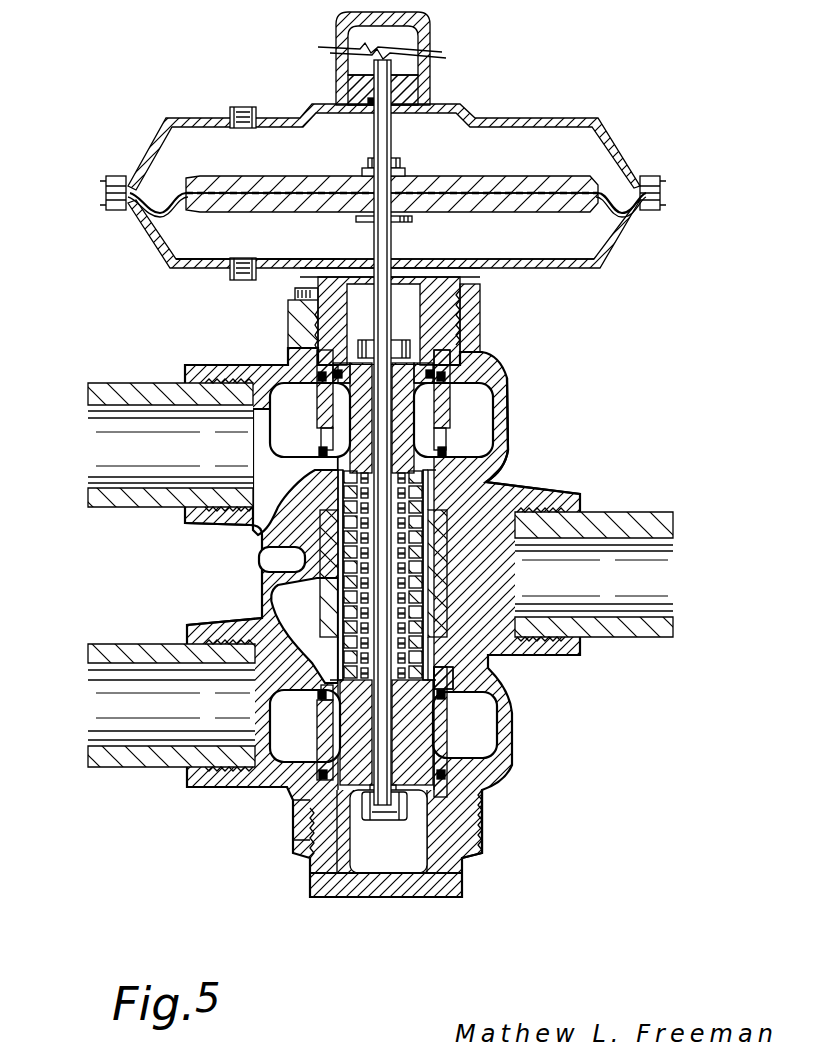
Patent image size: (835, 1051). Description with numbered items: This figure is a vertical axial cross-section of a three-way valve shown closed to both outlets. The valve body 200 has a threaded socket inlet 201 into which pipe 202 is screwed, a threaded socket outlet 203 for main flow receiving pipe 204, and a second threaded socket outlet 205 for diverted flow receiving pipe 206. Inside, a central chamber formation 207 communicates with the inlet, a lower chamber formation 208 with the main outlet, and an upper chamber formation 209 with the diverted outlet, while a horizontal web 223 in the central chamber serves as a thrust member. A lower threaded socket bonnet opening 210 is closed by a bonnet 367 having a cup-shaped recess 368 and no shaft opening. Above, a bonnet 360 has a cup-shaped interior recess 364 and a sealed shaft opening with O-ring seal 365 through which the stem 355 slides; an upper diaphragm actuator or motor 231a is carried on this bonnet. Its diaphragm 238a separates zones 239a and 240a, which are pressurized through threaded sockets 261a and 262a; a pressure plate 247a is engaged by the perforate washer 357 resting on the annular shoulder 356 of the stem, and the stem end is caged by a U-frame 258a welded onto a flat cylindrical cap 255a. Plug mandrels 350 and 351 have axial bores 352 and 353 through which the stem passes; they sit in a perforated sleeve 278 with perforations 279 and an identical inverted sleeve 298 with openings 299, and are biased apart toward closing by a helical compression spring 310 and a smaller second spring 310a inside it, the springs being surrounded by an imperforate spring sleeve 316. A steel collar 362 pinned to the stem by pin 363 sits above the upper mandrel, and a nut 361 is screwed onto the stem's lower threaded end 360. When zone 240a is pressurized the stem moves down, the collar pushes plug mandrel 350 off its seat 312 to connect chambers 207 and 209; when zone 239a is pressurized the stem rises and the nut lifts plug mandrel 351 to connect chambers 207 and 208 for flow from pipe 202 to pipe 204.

The valve body 200 is at (519, 701).
The threaded socket inlet 201 is at (545, 497).
The pipe 202 is at (650, 512).
The threaded socket outlet 203 is at (200, 622).
The pipe 204 is at (95, 643).
The second threaded socket outlet 205 is at (220, 530).
The pipe 206 is at (95, 508).
The central chamber formation 207 is at (470, 493).
The lower chamber formation 208 is at (490, 738).
The upper chamber formation 209 is at (483, 423).
The lower threaded socket bonnet opening 210 is at (482, 807).
The web 223 is at (285, 548).
The upper diaphragm actuator or motor 231a is at (624, 239).
The diaphragm 238a is at (600, 200).
The zone 239a is at (593, 250).
The zone 240a is at (553, 140).
The pressure plate 247a is at (470, 215).
The flat cylindrical cap 255a is at (428, 96).
The U-frame 258a is at (432, 33).
The threaded socket 261a is at (232, 268).
The threaded socket 262a is at (233, 105).
The cylindrical tubular sleeve 278 is at (480, 408).
The perforations 279 is at (436, 437).
The sleeve 298 is at (445, 728).
The openings 299 is at (310, 705).
The helical compression spring 310 is at (410, 538).
The second spring 310a is at (400, 572).
The rectangular edge 312 is at (323, 453).
The spring sleeve 316 is at (440, 605).
The plug mandrel 350 is at (430, 402).
The plug mandrel 351 is at (440, 740).
The shaft-receiving axial opening or bore 352 is at (345, 398).
The shaft-receiving axial opening or bore 353 is at (335, 738).
The shaft or stem 355 is at (390, 708).
The annular shoulder 356 is at (392, 232).
The perforate washer 357 is at (355, 222).
The bonnet 360 is at (443, 290).
The nut 361 is at (360, 822).
The steel collar 362 is at (410, 343).
The pin 363 is at (310, 345).
The cup-shaped interior recess 364 is at (450, 315).
The O-ring seal 365 is at (340, 262).
The bonnet 367 is at (463, 873).
The cup-shaped recess 368 is at (375, 873).